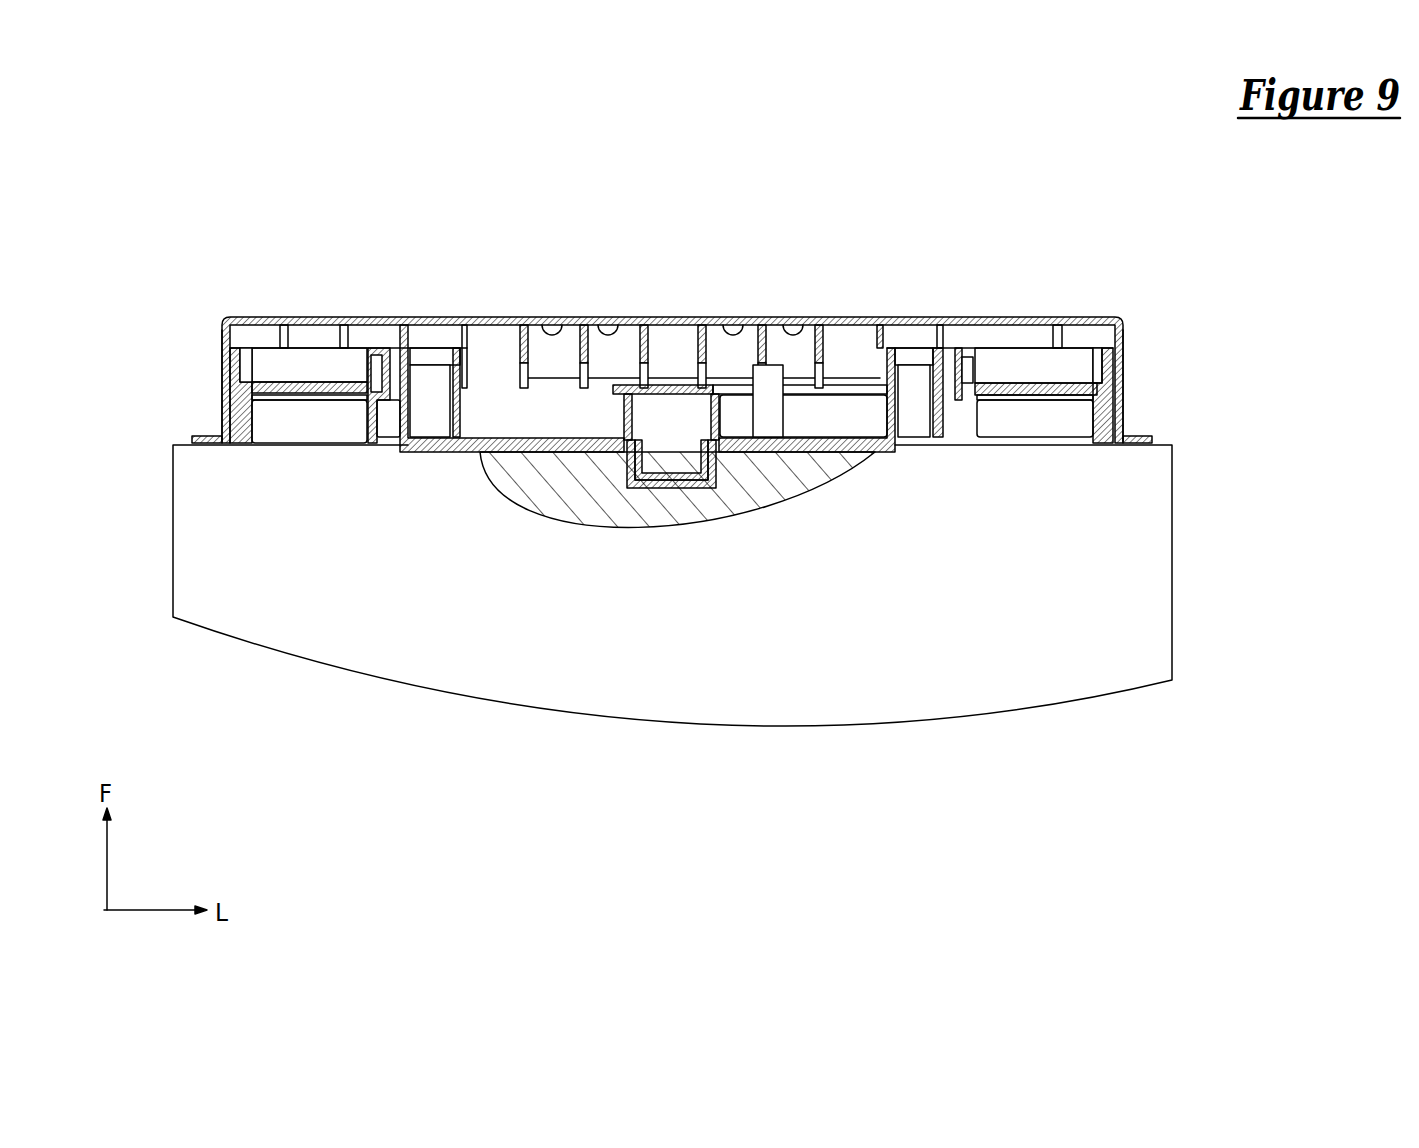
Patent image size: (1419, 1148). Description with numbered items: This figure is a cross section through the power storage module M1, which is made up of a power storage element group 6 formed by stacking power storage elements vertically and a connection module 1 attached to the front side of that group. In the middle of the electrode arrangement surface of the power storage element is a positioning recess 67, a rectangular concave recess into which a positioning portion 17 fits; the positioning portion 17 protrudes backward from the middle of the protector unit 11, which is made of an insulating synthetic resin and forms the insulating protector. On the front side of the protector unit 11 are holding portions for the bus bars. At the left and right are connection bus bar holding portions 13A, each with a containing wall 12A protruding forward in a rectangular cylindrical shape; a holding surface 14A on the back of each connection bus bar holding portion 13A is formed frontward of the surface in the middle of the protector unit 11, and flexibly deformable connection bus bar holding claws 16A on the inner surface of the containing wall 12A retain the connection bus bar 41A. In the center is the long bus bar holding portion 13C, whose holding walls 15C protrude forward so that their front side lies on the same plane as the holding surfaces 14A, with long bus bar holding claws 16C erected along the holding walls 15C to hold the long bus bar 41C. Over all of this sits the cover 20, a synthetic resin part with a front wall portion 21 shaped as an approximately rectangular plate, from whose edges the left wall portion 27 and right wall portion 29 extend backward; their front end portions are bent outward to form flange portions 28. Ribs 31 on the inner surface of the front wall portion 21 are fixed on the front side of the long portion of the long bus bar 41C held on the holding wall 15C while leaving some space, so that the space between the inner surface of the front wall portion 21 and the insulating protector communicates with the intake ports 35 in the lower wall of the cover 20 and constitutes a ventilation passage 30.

The connection module 1 is at (1262, 385).
The power storage element group 6 is at (1262, 625).
The power storage module M1 is at (240, 203).
The protector unit 11 is at (428, 446).
The containing wall 12A is at (1104, 400).
The connection bus bar holding portion 13A is at (323, 362).
The long bus bar holding portion 13C is at (666, 356).
The holding surface 14A is at (1082, 399).
The holding wall 15C is at (707, 413).
The connection bus bar holding claw 16A is at (1010, 401).
The long bus bar holding claw 16C is at (773, 415).
The positioning portion 17 is at (678, 470).
The cover 20 is at (1107, 317).
The front wall portion 21 is at (433, 322).
The left wall portion 27 is at (1122, 352).
The flange portion 28 is at (203, 436).
The right wall portion 29 is at (222, 352).
The ventilation passage 30 is at (489, 380).
The rib 31 is at (768, 365).
The intake port 35 is at (612, 328).
The connection bus bar 41A is at (300, 390).
The long bus bar 41C is at (675, 388).
The positioning recess 67 is at (693, 487).